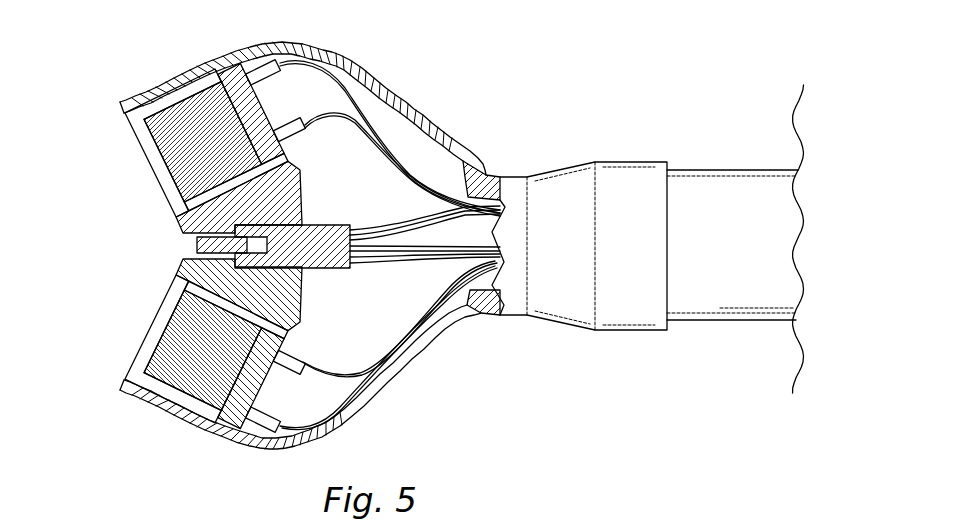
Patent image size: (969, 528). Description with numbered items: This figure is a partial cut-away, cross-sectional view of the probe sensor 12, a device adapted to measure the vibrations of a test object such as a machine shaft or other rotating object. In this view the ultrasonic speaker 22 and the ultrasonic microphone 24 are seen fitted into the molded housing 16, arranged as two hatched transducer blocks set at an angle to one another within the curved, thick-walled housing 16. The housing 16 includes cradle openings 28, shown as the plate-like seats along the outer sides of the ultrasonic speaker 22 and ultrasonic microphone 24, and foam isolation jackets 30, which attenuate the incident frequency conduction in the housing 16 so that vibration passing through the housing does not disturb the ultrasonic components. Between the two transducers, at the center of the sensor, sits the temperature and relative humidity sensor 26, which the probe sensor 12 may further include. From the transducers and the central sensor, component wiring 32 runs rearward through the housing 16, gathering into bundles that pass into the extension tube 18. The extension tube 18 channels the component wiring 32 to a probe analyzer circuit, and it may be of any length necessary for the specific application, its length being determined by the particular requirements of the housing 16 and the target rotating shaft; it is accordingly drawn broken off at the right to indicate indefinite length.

The probe sensor 12 is at (468, 112).
The housing 16 is at (387, 407).
The extension tube 18 is at (725, 197).
The ultrasonic speaker 22 is at (173, 323).
The ultrasonic microphone 24 is at (140, 137).
The temperature and relative humidity sensor 26 is at (328, 223).
The cradle openings 28 is at (172, 203).
The foam isolation jackets 30 is at (230, 70).
The component wiring 32 is at (458, 292).